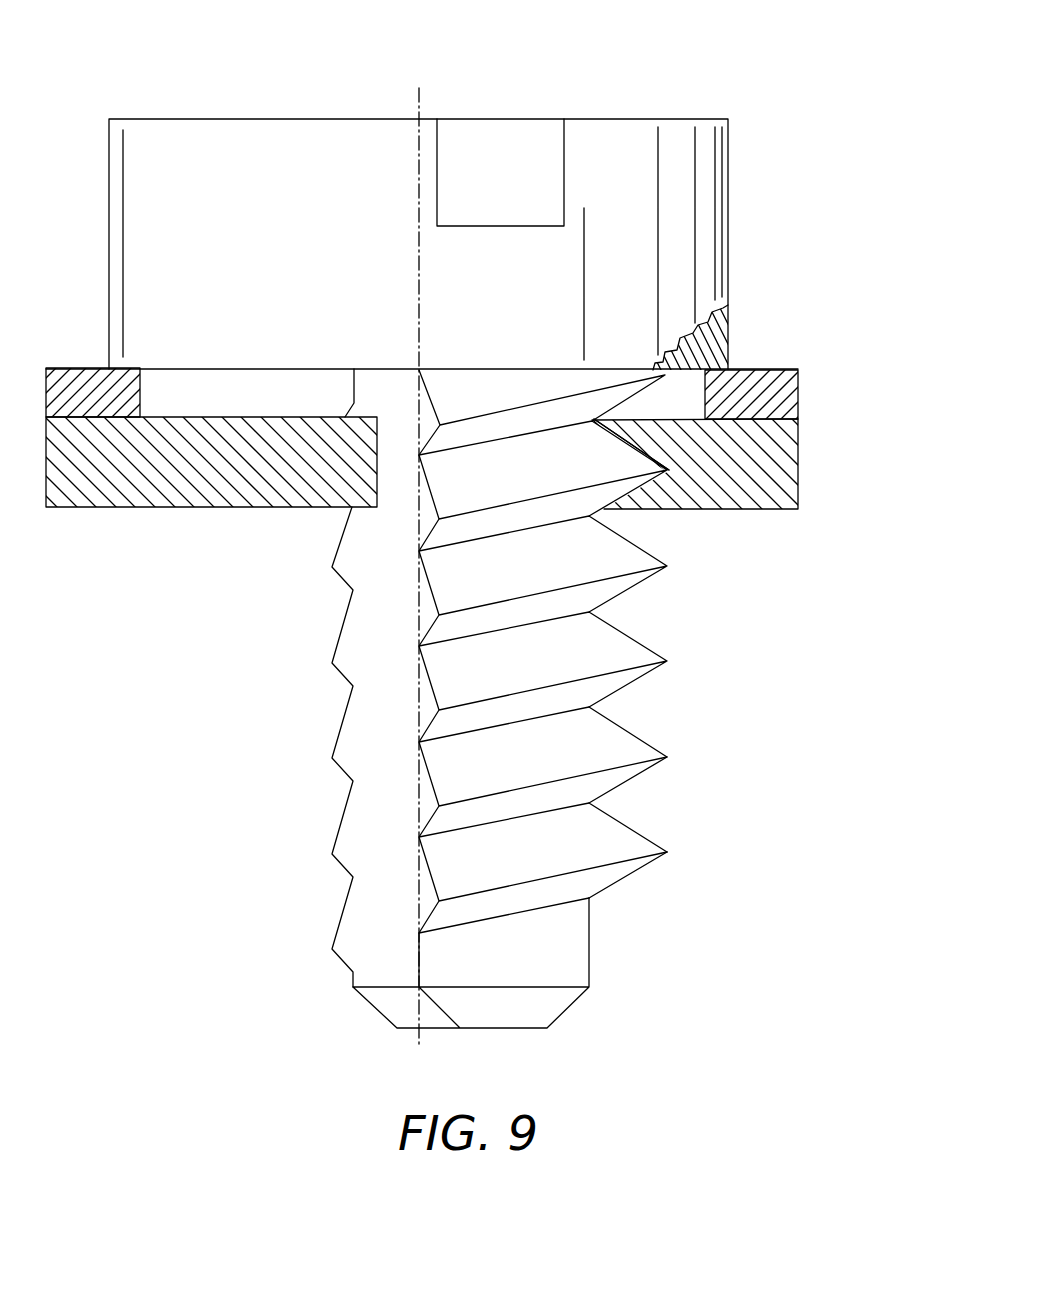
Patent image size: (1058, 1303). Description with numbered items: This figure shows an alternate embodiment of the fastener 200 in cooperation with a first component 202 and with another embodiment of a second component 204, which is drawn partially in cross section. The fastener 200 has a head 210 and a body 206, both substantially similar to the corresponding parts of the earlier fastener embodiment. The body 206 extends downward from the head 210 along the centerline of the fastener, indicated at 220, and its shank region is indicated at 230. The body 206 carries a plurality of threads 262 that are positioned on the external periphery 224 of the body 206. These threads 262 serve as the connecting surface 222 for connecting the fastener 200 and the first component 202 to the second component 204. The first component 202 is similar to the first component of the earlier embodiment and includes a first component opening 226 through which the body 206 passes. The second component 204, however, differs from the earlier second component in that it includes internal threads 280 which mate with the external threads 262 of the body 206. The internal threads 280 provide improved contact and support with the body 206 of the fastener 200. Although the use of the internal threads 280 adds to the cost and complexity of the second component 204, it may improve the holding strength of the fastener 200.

The fastener 200 is at (592, 59).
The head 210 is at (728, 121).
The longitudinal axis 220 is at (418, 116).
The shank 230 is at (372, 533).
The body 206 is at (307, 801).
The connecting surface 222 is at (631, 632).
The external periphery 224 is at (668, 853).
The threads 262 is at (673, 762).
The first component 202 is at (800, 397).
The second component 204 is at (800, 446).
The first component opening 226 is at (675, 395).
The internal threads 280 is at (622, 487).